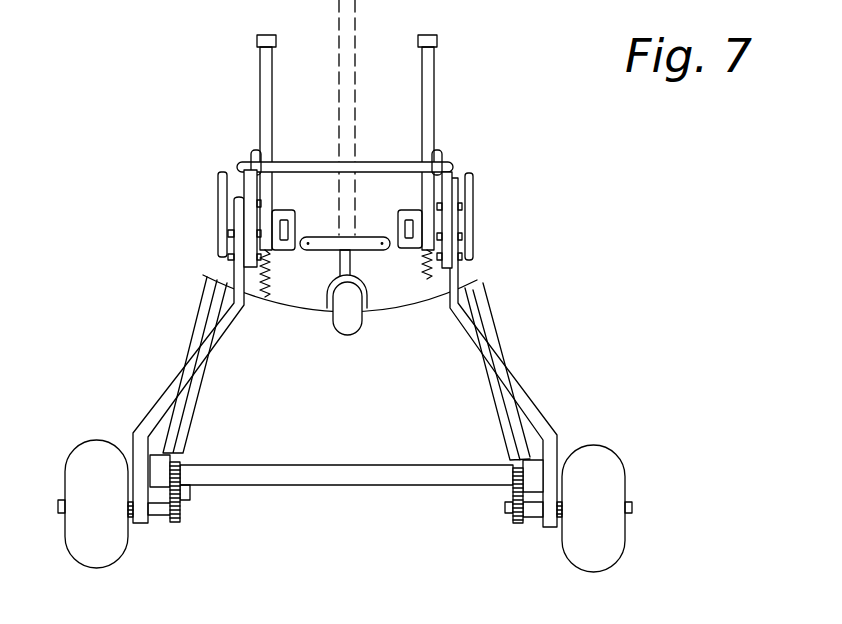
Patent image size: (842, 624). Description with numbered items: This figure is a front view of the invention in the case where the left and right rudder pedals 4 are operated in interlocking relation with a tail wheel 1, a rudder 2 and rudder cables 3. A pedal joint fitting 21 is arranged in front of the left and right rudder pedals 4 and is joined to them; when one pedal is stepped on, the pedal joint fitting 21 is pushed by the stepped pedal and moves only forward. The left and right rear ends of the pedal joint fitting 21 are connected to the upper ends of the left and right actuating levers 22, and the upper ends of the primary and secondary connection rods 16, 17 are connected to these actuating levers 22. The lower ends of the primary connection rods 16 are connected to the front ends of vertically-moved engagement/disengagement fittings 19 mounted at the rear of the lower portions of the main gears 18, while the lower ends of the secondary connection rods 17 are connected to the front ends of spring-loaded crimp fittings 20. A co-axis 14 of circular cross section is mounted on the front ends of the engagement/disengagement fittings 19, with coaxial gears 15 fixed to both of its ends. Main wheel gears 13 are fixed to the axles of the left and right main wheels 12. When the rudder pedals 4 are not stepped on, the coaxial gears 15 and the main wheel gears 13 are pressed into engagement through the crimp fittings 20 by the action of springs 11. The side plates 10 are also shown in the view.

The tail wheel 1 is at (350, 317).
The rudder 2 is at (356, 99).
The rudder cables 3 is at (400, 236).
The rudder pedals 4 is at (400, 213).
The side plate 10 is at (473, 247).
The springs 11 is at (430, 277).
The main wheels 12 is at (103, 538).
The main wheel gears 13 is at (182, 517).
The co-axis 14 is at (394, 487).
The coaxial gears 15 is at (185, 468).
The primary connection rods 16 is at (228, 330).
The secondary connection rods 17 is at (198, 413).
The main gears 18 is at (528, 397).
The engagement/disengagement fittings 19 is at (533, 475).
The spring-loaded crimp fittings 20 is at (507, 507).
The pedal joint fitting 21 is at (453, 168).
The actuating levers 22 is at (447, 184).